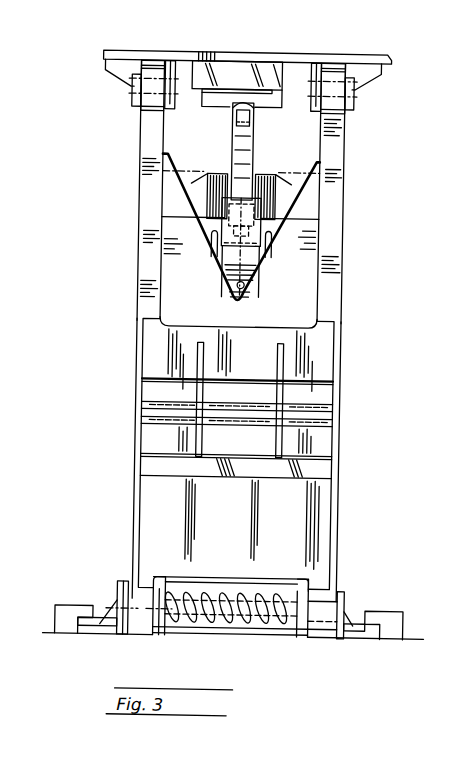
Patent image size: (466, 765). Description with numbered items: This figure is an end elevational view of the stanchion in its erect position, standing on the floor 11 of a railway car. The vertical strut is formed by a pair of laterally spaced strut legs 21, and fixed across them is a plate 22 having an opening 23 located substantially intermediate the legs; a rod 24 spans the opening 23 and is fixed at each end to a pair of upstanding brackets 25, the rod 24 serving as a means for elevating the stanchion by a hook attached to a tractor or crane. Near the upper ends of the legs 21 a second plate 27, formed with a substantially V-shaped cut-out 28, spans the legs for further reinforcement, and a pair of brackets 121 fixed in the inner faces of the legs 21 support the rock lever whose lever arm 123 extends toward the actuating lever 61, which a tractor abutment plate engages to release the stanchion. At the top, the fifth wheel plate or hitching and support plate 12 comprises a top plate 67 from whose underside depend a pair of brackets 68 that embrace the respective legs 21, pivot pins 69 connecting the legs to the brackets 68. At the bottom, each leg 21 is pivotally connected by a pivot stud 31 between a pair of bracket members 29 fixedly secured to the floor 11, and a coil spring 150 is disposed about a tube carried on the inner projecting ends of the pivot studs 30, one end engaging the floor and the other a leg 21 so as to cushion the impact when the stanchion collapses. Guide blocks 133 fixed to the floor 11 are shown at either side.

The floor 11 is at (418, 638).
The fifth wheel plate or hitching and support plate 12 is at (306, 54).
The strut legs 21 is at (150, 208).
The plate 22 is at (155, 498).
The opening 23 is at (250, 398).
The rod 24 is at (325, 420).
The upstanding brackets 25 is at (277, 438).
The second plate 27 is at (162, 263).
The V-shaped cut-out 28 is at (284, 188).
The bracket members 29 is at (157, 635).
The pivot studs 30 is at (276, 594).
The pivot stud 31 is at (115, 597).
The actuating lever 61 is at (229, 265).
The top plate 67 is at (384, 65).
The brackets 68 is at (150, 114).
The pivot pins 69 is at (130, 94).
The brackets 121 is at (214, 173).
The lever arm 123 is at (232, 146).
The guide blocks 133 is at (61, 607).
The coil spring 150 is at (248, 630).